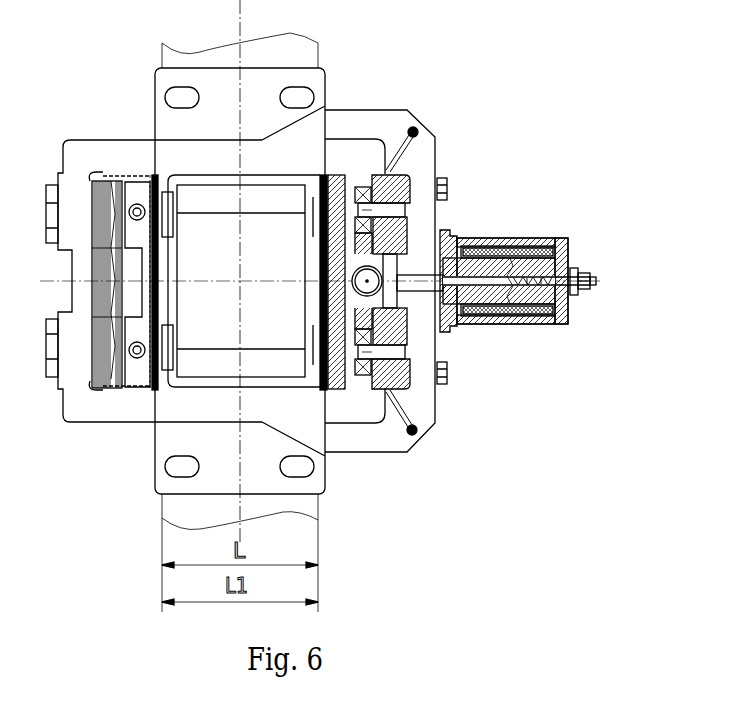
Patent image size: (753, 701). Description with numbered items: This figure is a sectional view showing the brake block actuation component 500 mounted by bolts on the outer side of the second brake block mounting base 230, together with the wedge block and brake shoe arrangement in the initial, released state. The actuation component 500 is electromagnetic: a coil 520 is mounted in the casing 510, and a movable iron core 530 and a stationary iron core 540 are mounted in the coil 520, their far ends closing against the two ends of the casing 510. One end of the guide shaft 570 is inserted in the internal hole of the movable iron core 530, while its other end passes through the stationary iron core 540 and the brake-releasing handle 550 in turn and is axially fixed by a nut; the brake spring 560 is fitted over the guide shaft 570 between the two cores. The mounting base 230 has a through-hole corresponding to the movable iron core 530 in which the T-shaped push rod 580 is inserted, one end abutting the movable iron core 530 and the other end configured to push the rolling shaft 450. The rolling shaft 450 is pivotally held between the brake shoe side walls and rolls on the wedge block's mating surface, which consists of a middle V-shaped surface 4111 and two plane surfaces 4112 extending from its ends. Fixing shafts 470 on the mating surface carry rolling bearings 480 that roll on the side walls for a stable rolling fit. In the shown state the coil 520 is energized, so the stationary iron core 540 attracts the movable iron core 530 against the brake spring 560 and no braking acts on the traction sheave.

The second brake block mounting base 230 is at (372, 122).
The V-shaped surface 4111 is at (446, 375).
The plane surfaces 4112 is at (381, 172).
The rolling shaft 450 is at (396, 250).
The fixing shaft 470 is at (408, 388).
The rolling bearing 480 is at (388, 428).
The push rod 580 is at (447, 183).
The brake block actuation component 500 is at (483, 238).
The casing 510 is at (507, 242).
The coil 520 is at (512, 255).
The movable iron core 530 is at (565, 238).
The stationary iron core 540 is at (570, 262).
The brake-releasing handle 550 is at (604, 282).
The brake spring 560 is at (571, 313).
The guide shaft 570 is at (558, 327).